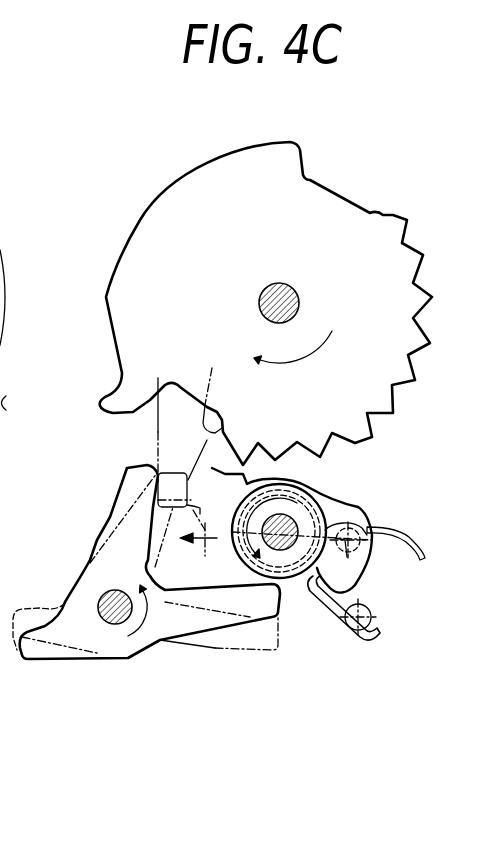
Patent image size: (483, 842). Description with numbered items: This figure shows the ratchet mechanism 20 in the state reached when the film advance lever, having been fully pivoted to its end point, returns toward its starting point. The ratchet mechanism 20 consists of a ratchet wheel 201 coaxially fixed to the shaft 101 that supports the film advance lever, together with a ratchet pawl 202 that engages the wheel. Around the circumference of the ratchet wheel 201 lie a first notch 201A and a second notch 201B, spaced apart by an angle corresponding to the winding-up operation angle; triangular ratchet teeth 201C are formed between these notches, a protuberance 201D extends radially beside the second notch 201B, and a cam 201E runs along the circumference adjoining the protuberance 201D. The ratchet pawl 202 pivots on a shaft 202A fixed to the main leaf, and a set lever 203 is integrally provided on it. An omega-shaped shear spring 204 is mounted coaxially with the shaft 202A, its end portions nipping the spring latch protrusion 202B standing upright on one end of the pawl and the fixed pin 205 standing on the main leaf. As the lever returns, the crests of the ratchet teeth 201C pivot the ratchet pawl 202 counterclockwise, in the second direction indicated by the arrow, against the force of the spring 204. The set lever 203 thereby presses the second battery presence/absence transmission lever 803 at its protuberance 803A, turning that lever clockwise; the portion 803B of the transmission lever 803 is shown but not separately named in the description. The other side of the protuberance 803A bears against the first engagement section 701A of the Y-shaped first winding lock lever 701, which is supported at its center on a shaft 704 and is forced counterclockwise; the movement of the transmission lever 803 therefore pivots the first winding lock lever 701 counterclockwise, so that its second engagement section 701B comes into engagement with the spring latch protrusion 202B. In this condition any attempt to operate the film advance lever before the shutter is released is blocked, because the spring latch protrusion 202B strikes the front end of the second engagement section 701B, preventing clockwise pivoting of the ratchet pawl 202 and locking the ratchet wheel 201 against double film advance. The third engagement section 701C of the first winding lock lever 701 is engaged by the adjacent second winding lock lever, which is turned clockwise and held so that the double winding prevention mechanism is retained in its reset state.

The ratchet mechanism 20 is at (380, 452).
The shaft 101 is at (278, 284).
The ratchet wheel 201 is at (402, 203).
The first notch 201A is at (335, 186).
The second notch 201B is at (193, 396).
The ratchet teeth 201C is at (410, 360).
The protuberance 201D is at (118, 393).
The cam 201E is at (103, 319).
The ratchet pawl 202 is at (362, 512).
The shaft 202A is at (283, 548).
The spring latch protrusion 202B is at (367, 547).
The set lever 203 is at (242, 463).
The shear spring 204 is at (425, 560).
The fixed pin 205 is at (372, 622).
The first winding lock lever 701 is at (133, 658).
The first engagement section 701A is at (133, 483).
The second engagement section 701B is at (247, 607).
The third engagement section 701C is at (40, 654).
The shaft 704 is at (110, 622).
The second battery presence/absence transmission lever 803 is at (157, 423).
The protuberance 803A is at (197, 554).
The tip of pawl 803B is at (226, 434).